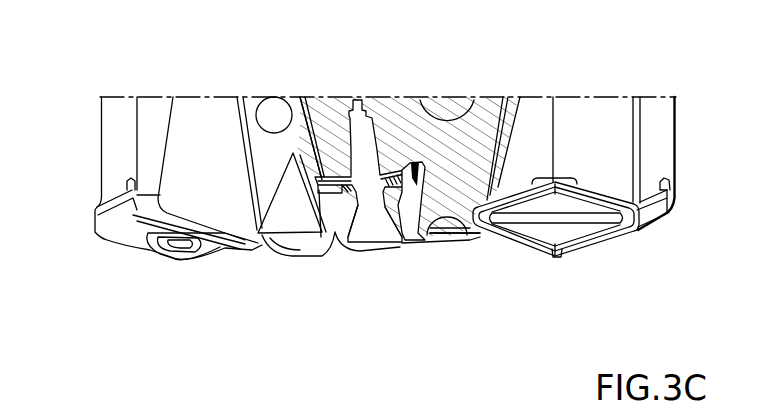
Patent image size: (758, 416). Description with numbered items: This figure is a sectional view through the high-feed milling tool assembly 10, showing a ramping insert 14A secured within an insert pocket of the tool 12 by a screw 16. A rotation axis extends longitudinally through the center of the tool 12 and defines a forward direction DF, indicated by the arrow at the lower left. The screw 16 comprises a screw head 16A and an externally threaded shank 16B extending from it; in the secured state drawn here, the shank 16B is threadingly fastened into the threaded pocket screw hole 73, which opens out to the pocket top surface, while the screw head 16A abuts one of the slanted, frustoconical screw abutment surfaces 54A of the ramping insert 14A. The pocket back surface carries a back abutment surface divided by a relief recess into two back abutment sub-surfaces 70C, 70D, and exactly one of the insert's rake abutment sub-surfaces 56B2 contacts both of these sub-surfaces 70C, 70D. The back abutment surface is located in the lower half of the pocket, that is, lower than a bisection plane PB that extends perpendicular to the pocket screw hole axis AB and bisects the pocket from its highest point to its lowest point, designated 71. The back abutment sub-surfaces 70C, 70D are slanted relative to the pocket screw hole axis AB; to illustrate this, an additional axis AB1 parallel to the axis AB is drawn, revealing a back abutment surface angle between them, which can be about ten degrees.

The high-feed milling tool assembly 10 is at (147, 76).
The tool 12 is at (574, 117).
The ramping insert 14A is at (418, 162).
The screw 16 is at (402, 199).
The screw head 16A is at (370, 247).
The externally threaded shank 16B is at (363, 132).
The screw abutment surface 54A is at (300, 255).
The second rake abutment sub-surface 56B2 is at (457, 240).
The back abutment sub-surface 70C is at (455, 230).
The back abutment sub-surface 70D is at (441, 230).
The lowest point of the insert pocket 71 is at (445, 240).
The threaded pocket screw hole 73 is at (345, 133).
The pocket screw hole axis AB is at (362, 132).
The additional axis AB1 is at (423, 230).
The bisection plane PB is at (296, 222).
The forward direction DF is at (80, 318).